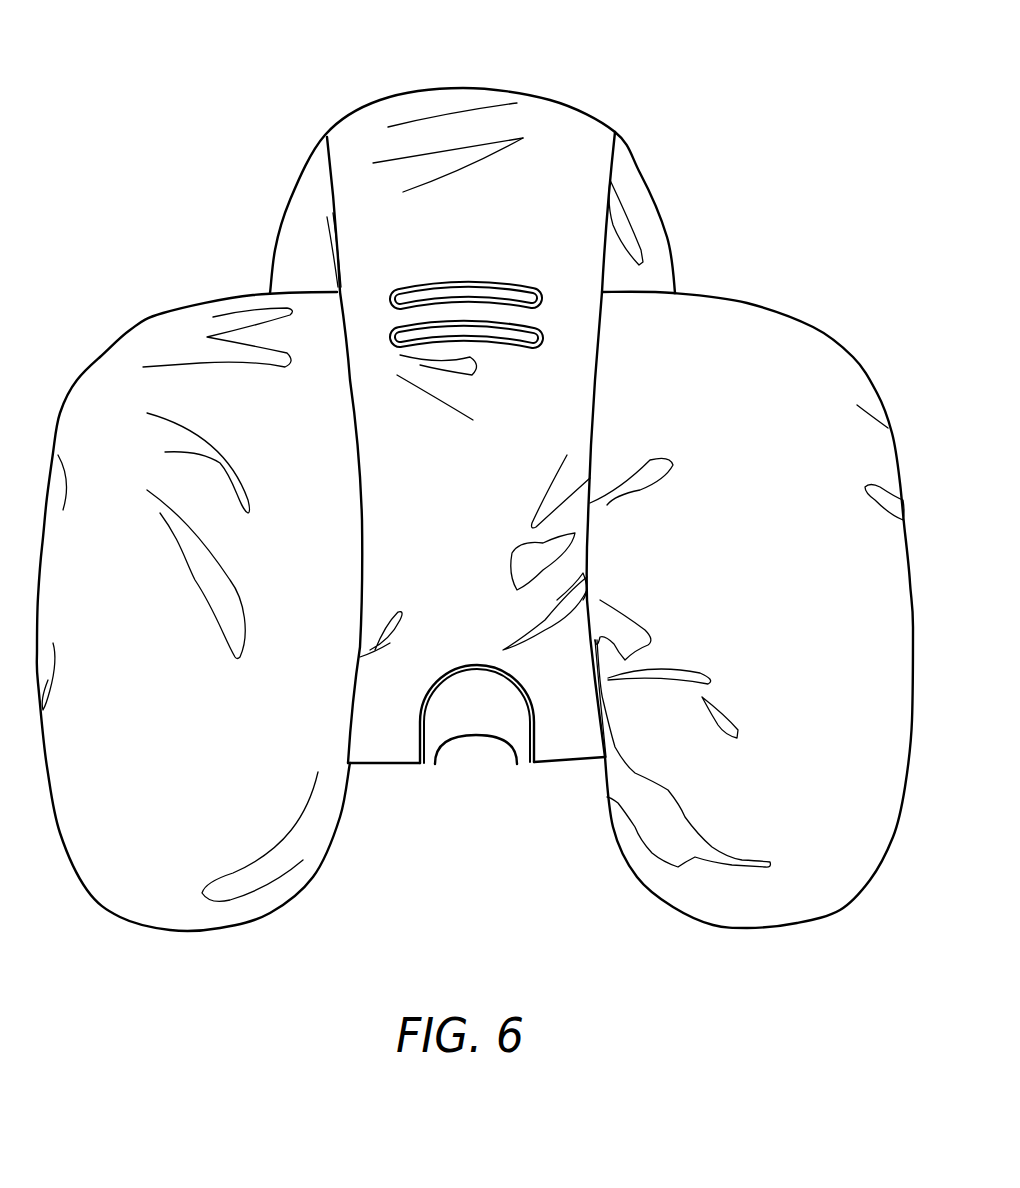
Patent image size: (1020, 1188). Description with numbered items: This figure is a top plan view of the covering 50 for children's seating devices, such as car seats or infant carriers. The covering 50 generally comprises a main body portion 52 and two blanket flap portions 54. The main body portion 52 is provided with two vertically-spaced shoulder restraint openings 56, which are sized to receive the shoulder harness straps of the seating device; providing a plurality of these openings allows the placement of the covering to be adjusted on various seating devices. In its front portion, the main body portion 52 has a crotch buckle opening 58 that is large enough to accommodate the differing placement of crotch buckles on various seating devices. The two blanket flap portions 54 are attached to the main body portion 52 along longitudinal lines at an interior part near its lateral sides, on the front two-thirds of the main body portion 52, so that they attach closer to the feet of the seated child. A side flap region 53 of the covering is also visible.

The covering 50 is at (640, 80).
The main body portion 52 is at (530, 120).
The side flap of head portion 53 is at (630, 217).
The blanket flap portions 54 is at (183, 888).
The shoulder restraint openings 56 is at (398, 332).
The crotch buckle opening 58 is at (523, 738).